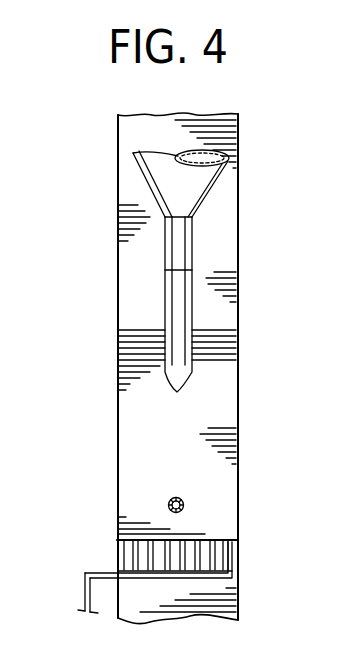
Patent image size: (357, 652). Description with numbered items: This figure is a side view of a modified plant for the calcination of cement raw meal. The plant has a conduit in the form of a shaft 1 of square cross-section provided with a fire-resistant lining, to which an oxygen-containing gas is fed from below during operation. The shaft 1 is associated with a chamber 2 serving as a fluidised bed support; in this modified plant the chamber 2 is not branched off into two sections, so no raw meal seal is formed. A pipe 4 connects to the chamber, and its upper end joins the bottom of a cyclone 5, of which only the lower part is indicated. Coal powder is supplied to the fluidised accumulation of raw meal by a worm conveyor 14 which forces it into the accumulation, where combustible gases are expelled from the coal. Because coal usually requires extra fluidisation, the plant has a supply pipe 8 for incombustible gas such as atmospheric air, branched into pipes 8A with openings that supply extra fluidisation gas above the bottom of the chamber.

The shaft 1 is at (135, 265).
The chamber 2 is at (210, 418).
The pipe 4 is at (182, 243).
The cyclone 5 is at (193, 183).
The supply pipe 8 is at (85, 587).
The pipes 8A is at (233, 545).
The worm conveyor 14 is at (184, 505).